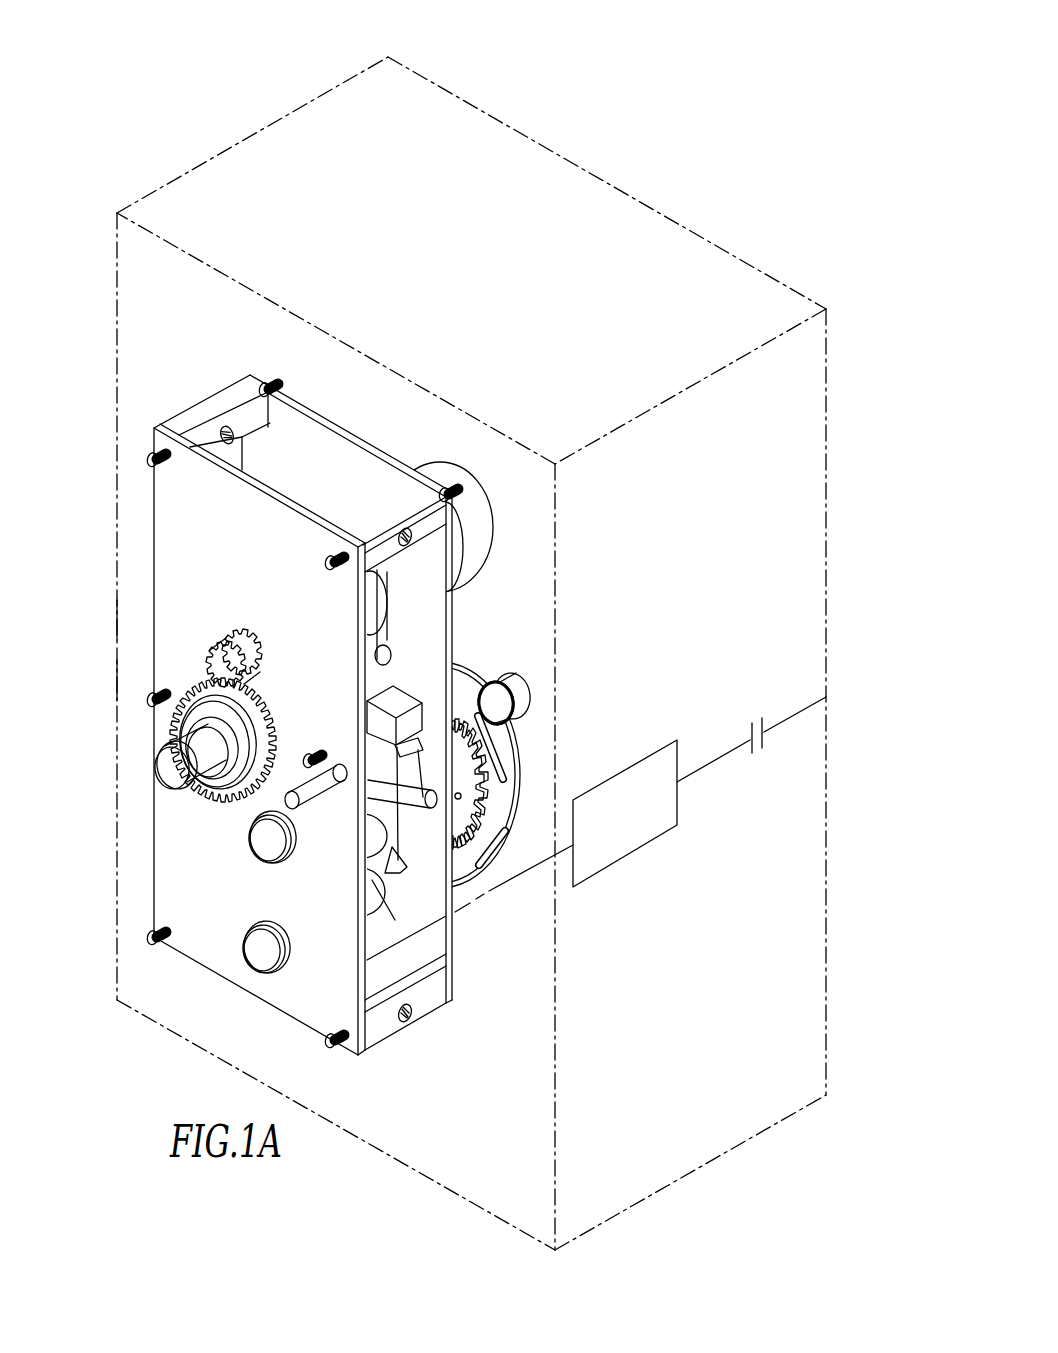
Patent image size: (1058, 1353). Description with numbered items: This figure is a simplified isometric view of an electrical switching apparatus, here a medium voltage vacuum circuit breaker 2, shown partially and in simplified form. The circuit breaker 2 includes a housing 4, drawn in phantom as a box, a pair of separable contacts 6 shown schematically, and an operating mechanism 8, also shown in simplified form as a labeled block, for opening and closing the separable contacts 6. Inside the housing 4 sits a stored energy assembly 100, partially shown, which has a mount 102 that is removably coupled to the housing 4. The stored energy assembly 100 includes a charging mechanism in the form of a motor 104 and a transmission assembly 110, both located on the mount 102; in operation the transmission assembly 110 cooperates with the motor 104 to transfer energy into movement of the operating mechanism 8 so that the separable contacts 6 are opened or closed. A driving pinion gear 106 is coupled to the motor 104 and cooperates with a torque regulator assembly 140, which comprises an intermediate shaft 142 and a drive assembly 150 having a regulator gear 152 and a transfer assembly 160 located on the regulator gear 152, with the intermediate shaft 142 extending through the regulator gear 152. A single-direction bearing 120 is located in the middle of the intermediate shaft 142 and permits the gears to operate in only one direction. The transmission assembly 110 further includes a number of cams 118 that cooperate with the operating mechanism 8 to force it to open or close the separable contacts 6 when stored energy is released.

The medium voltage vacuum circuit breaker 2 is at (57, 928).
The housing 4 is at (762, 1135).
The separable contacts 6 is at (760, 722).
The operating mechanism 8 is at (630, 855).
The stored energy assembly 100 is at (291, 750).
The mount 102 is at (140, 490).
The motor 104 is at (415, 455).
The driving pinion gear 106 is at (205, 655).
The transmission assembly 110 is at (490, 903).
The cams 118 is at (412, 877).
The single-direction bearing 120 is at (144, 767).
The torque regulator assembly 140 is at (108, 632).
The intermediate shaft 142 is at (177, 773).
The drive assembly 150 is at (108, 692).
The regulator gear 152 is at (232, 710).
The transfer assembly 160 is at (158, 720).